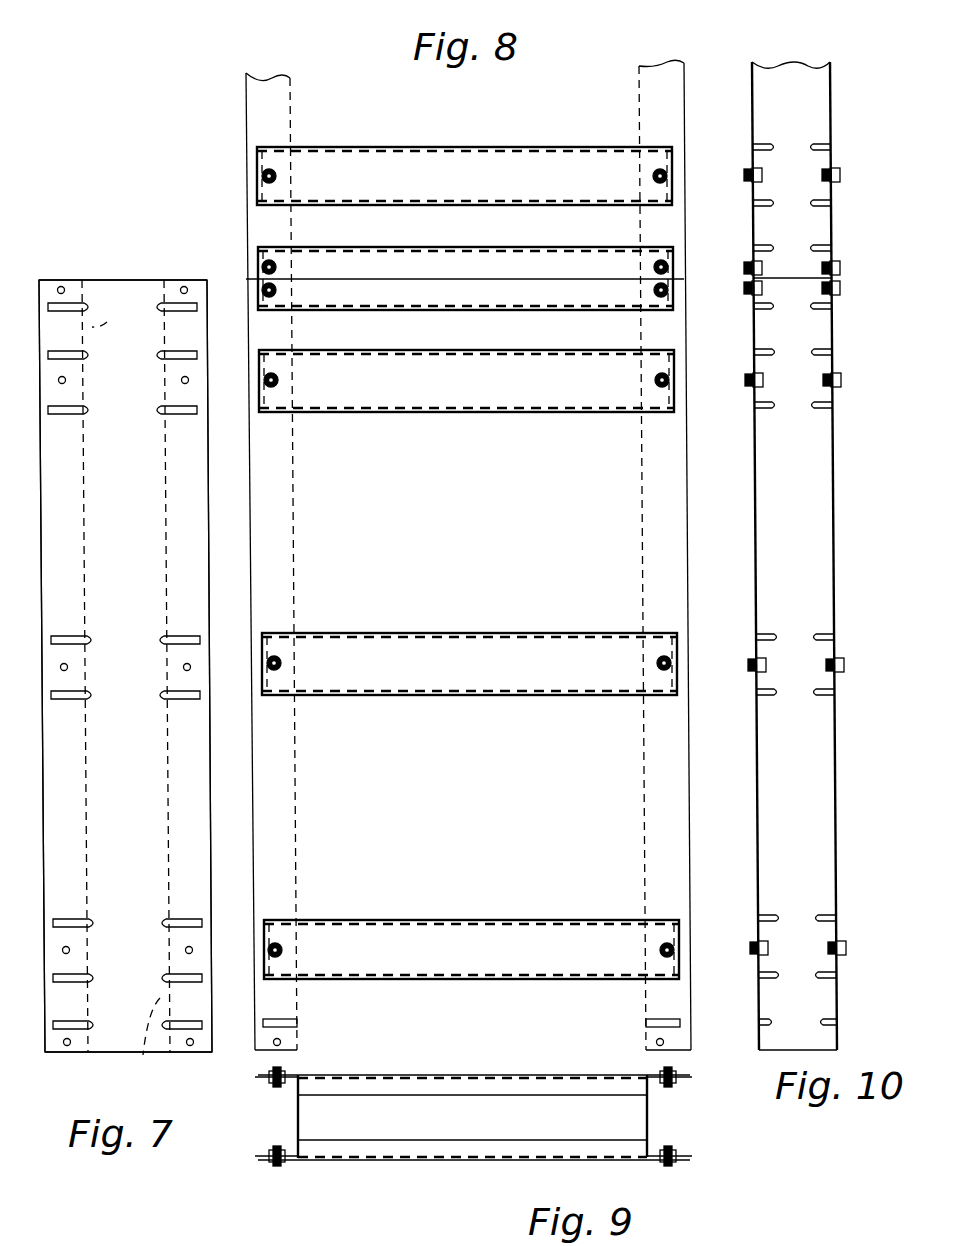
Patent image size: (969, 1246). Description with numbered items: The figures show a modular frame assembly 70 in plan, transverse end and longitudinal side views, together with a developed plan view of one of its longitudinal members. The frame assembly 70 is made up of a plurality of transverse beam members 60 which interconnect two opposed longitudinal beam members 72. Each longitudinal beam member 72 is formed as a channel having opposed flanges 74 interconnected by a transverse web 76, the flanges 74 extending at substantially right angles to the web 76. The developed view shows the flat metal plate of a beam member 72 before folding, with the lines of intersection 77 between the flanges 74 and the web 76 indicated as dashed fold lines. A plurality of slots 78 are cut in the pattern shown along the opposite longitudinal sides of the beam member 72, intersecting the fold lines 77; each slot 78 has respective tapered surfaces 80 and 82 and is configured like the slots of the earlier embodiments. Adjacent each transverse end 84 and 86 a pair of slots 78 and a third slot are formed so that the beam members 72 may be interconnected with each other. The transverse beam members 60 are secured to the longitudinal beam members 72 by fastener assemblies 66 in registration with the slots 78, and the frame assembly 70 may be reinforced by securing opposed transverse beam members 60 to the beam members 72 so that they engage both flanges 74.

In FIG. 8, the transverse beam member 60 is at (505, 146).
In FIG. 9, the transverse beam member 60 is at (482, 1074).
In FIG. 10, the transverse beam member 60 is at (748, 158).
In FIG. 8, the fastener assembly 66 is at (272, 388).
In FIG. 9, the fastener assembly 66 is at (283, 1075).
In FIG. 10, the fastener assembly 66 is at (745, 178).
In FIG. 8, the modular frame assembly 70 is at (572, 70).
In FIG. 9, the modular frame assembly 70 is at (380, 1186).
In FIG. 10, the modular frame assembly 70 is at (888, 440).
In FIG. 7, the longitudinal beam member 72 is at (134, 280).
In FIG. 8, the longitudinal beam member 72 is at (293, 543).
In FIG. 9, the longitudinal beam member 72 is at (296, 1120).
In FIG. 10, the longitudinal beam member 72 is at (822, 103).
In FIG. 7, the flange 74 is at (42, 522).
In FIG. 8, the flange 74 is at (292, 805).
In FIG. 9, the flange 74 is at (265, 1080).
In FIG. 10, the flange 74 is at (758, 828).
In FIG. 7, the transverse web 76 is at (133, 525).
In FIG. 9, the transverse web 76 is at (300, 1108).
In FIG. 10, the transverse web 76 is at (828, 792).
In FIG. 7, the line of intersection 77 is at (134, 681).
In FIG. 7, the slot 78 is at (178, 310).
In FIG. 8, the slot 78 is at (278, 247).
In FIG. 7, the tapered surface 80 is at (160, 312).
In FIG. 7, the tapered surface 82 is at (164, 360).
In FIG. 7, the transverse end 84 is at (107, 278).
In FIG. 7, the transverse end 86 is at (55, 1055).